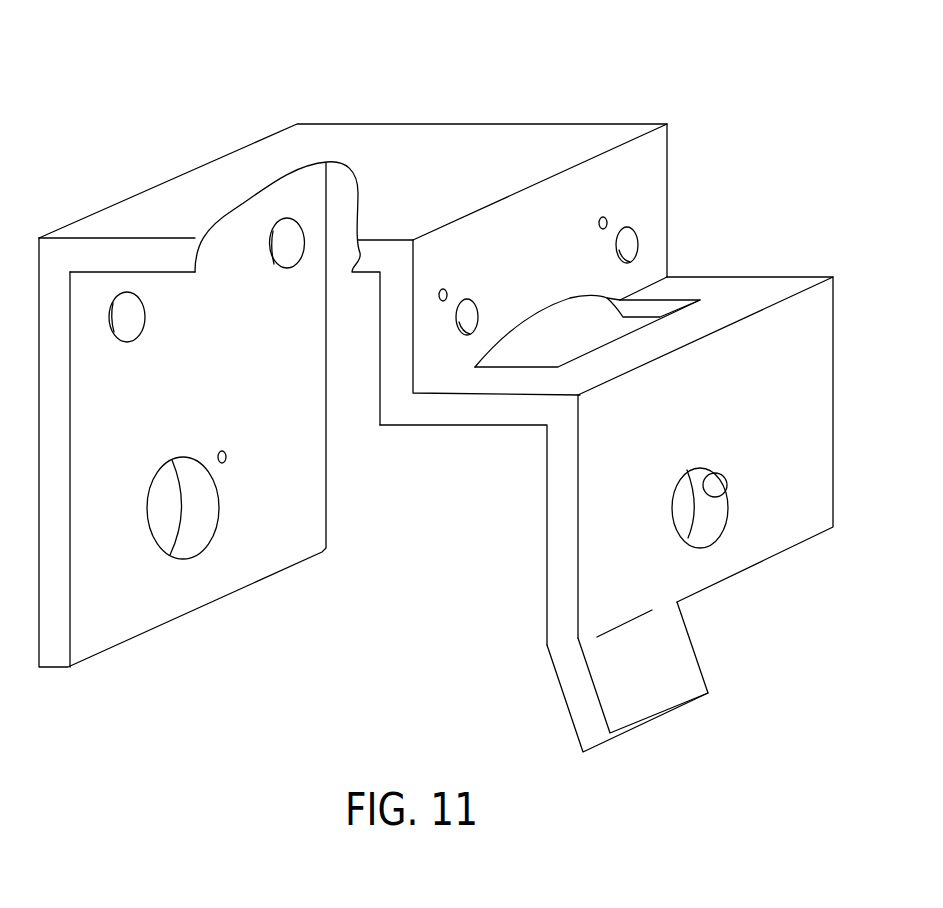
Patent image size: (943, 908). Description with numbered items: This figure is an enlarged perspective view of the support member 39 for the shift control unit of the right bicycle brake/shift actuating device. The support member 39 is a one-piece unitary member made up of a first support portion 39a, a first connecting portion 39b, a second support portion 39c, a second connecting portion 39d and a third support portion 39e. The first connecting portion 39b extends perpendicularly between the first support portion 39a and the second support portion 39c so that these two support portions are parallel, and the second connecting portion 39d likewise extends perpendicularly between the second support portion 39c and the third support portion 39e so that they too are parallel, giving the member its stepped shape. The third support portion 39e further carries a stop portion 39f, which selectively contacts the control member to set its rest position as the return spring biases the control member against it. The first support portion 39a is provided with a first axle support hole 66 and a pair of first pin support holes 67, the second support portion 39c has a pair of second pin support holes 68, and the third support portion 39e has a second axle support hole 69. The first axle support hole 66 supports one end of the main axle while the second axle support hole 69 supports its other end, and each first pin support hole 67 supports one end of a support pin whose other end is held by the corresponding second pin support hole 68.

The support member 39 is at (163, 82).
The first support portion 39a is at (108, 602).
The first connecting portion 39b is at (468, 155).
The second support portion 39c is at (642, 175).
The second connecting portion 39d is at (505, 378).
The third support portion 39e is at (787, 517).
The stop portion 39f is at (635, 685).
The first axle support hole 66 is at (215, 500).
The first pin support holes 67 is at (133, 333).
The second pin support holes 68 is at (616, 244).
The second axle support hole 69 is at (733, 497).